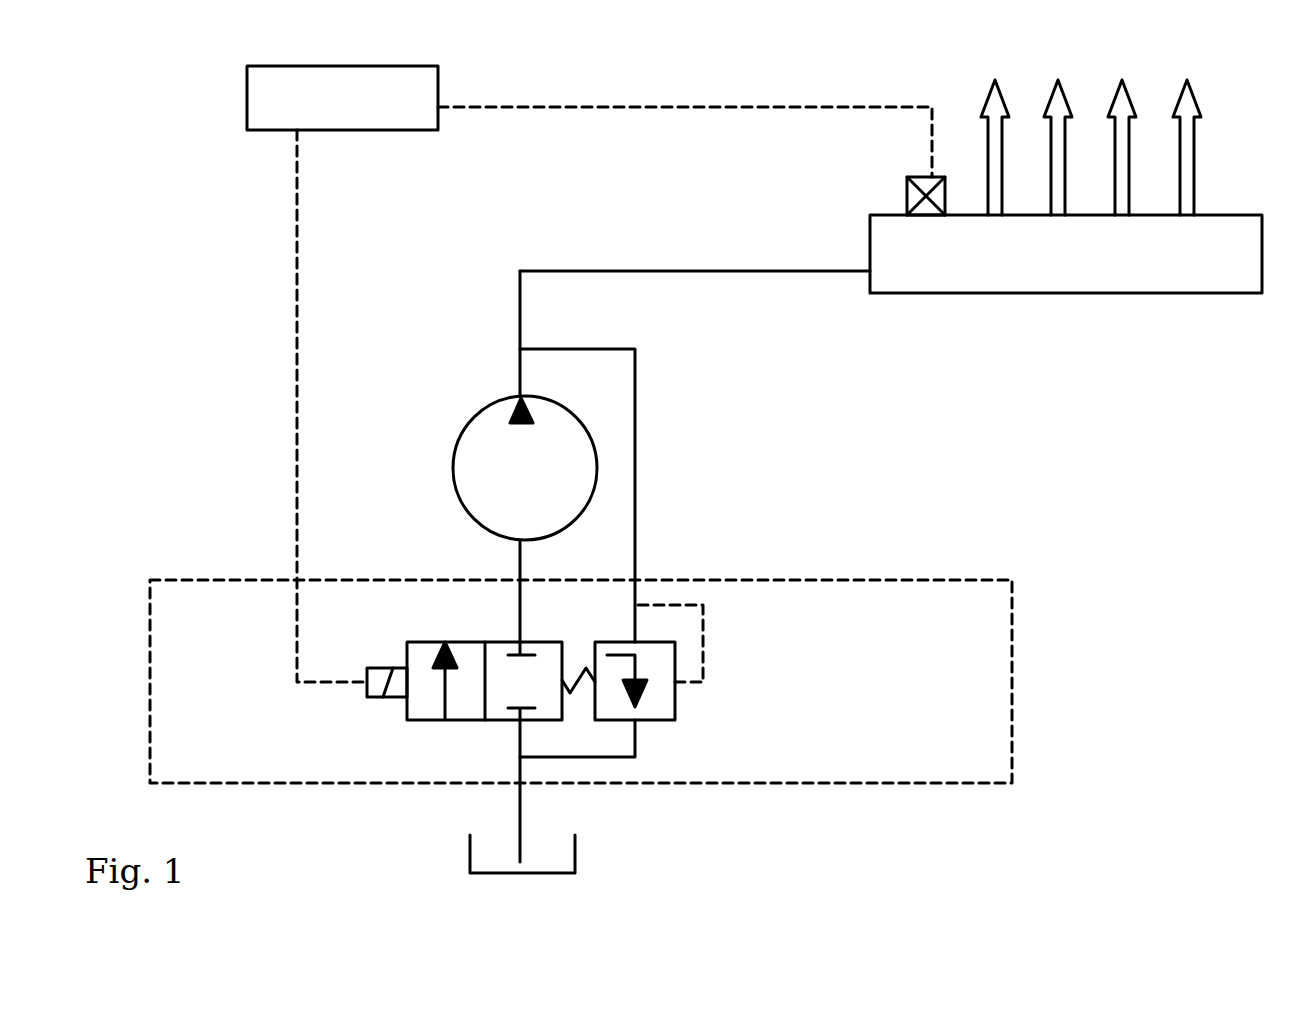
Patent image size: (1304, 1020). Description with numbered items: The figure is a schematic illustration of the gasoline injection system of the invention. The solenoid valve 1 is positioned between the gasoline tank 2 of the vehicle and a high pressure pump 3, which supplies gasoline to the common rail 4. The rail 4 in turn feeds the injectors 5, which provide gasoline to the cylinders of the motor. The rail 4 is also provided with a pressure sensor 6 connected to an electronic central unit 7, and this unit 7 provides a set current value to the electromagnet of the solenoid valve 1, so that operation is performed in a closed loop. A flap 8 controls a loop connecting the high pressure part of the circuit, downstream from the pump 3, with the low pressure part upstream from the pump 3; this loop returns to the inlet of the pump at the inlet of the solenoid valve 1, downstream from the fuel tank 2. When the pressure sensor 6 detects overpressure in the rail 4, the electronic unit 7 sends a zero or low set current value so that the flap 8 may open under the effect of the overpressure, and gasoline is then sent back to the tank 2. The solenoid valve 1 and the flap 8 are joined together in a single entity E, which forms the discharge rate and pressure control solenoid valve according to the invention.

The solenoid valve 1 is at (423, 722).
The gasoline tank 2 is at (578, 851).
The high pressure pump 3 is at (600, 455).
The common rail 4 is at (983, 297).
The injectors 5 is at (1136, 96).
The pressure sensor 6 is at (905, 200).
The electronic central unit 7 is at (370, 132).
The flap 8 is at (682, 707).
The single entity E is at (1015, 673).